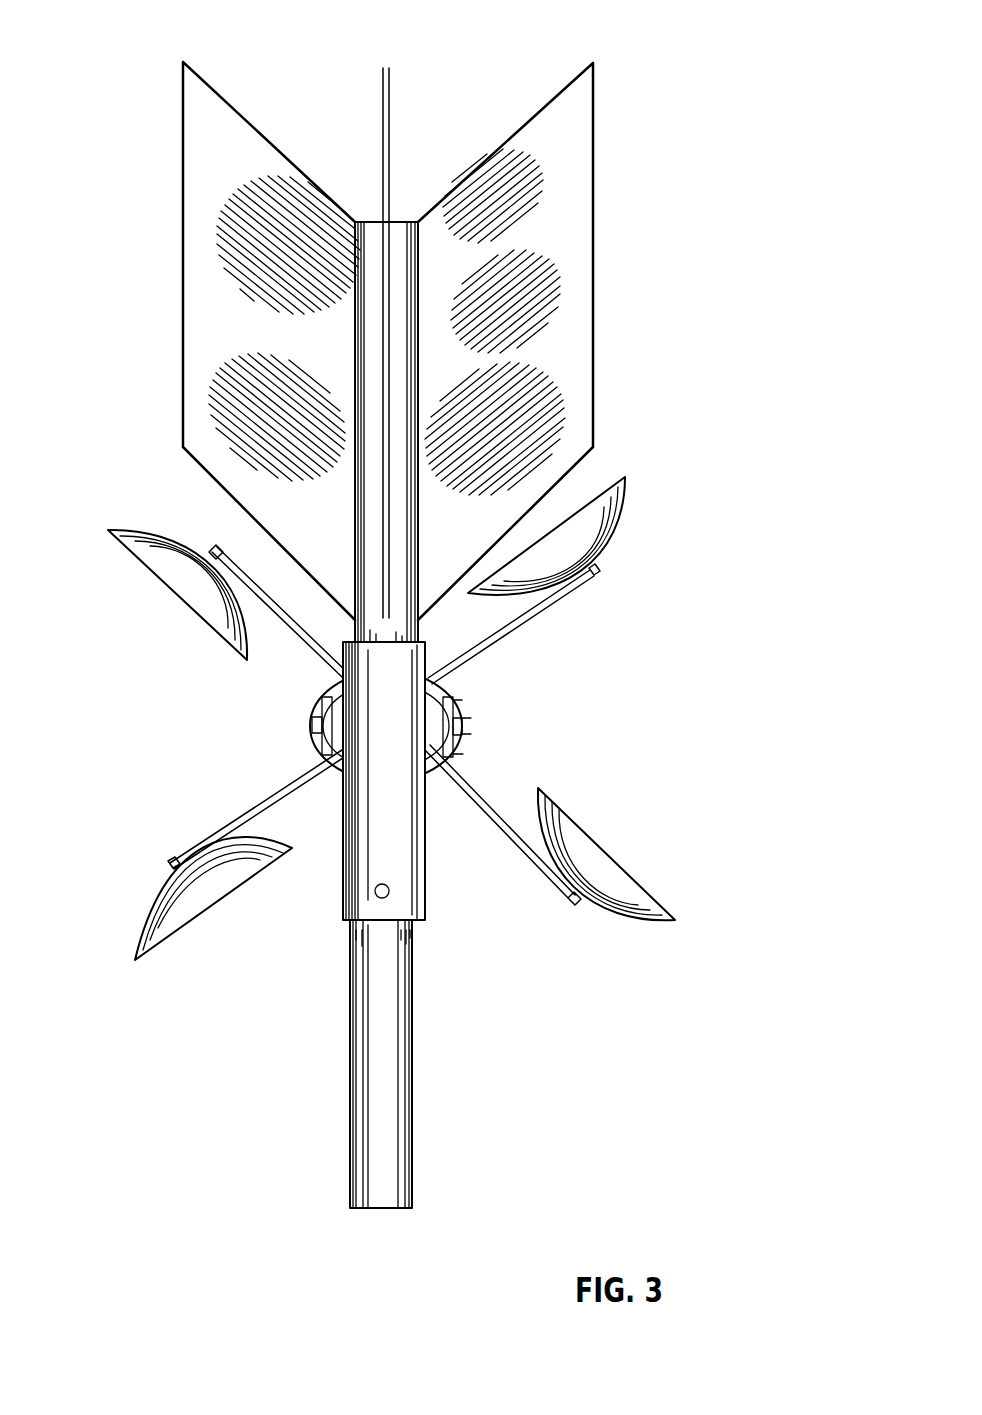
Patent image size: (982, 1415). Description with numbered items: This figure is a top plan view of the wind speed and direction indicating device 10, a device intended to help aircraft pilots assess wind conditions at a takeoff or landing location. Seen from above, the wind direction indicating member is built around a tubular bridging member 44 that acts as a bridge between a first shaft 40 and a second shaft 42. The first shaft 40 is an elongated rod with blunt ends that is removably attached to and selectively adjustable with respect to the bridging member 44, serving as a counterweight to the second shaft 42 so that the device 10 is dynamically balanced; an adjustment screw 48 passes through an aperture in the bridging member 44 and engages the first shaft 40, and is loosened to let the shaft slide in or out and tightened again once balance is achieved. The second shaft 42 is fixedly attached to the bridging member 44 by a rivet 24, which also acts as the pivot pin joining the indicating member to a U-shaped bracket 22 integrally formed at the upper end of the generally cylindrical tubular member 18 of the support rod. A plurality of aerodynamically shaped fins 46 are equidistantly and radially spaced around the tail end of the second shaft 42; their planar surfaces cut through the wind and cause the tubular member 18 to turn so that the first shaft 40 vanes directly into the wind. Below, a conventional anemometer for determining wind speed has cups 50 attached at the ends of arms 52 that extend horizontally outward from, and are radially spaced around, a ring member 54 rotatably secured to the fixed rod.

The wind speed and direction indicating device 10 is at (652, 141).
The tubular member 18 is at (460, 760).
The U-shaped bracket 22 is at (320, 691).
The rivet 24 is at (313, 711).
The first shaft 40 is at (383, 1090).
The second shaft 42 is at (400, 237).
The bridging member 44 is at (373, 858).
The fins 46 is at (383, 122).
The adjustment screw 48 is at (390, 893).
The cups 50 is at (192, 612).
The arms 52 is at (236, 560).
The ring member 54 is at (312, 740).